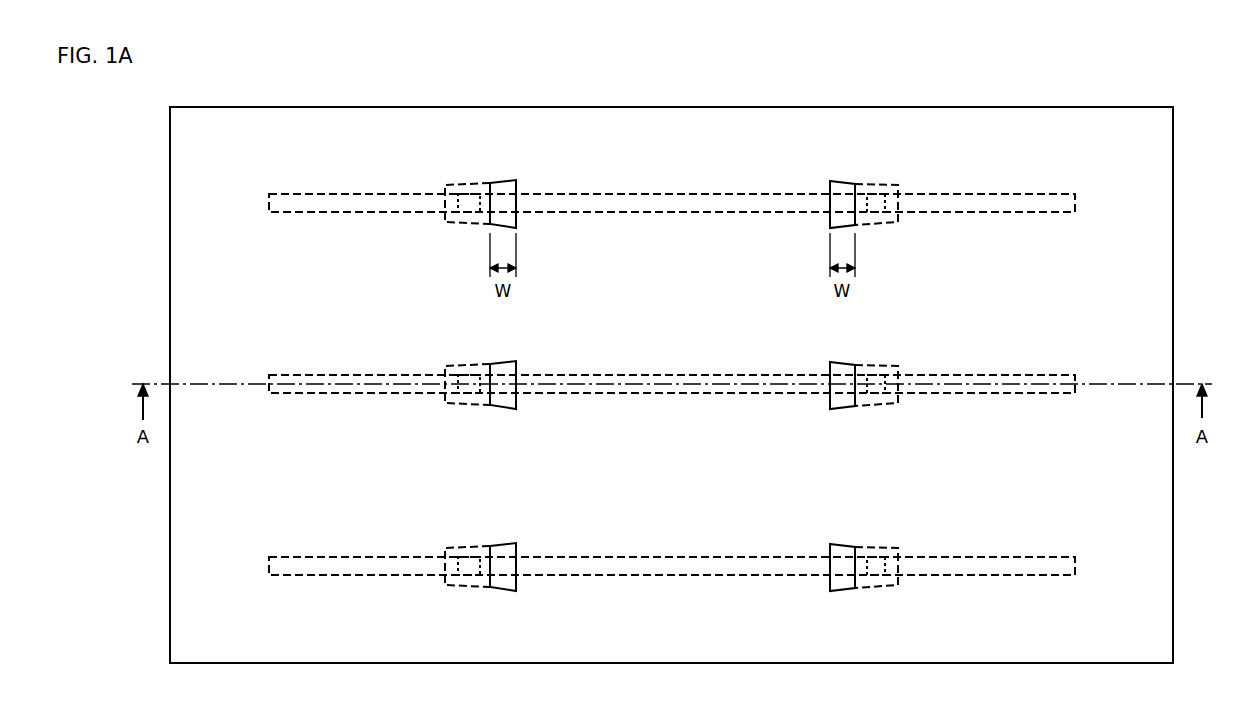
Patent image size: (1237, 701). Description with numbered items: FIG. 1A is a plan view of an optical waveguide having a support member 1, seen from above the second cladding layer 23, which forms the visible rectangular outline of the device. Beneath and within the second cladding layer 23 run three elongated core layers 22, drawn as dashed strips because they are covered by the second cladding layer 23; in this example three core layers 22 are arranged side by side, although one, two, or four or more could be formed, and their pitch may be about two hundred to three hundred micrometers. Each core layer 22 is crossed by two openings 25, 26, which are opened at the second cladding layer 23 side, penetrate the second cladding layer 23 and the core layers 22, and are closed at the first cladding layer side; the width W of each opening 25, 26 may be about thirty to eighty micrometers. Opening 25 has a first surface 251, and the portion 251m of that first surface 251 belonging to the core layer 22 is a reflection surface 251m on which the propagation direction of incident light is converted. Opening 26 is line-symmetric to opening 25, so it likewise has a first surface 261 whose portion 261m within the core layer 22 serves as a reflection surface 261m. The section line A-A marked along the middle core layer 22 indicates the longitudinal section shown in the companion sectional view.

The optical waveguide having a support member 1 is at (1179, 106).
The core layer 22 is at (1057, 195).
The second cladding layer 23 is at (1163, 223).
The opening 25 is at (496, 324).
The first surface 251 is at (513, 186).
The reflection surface 251m is at (476, 186).
The opening 26 is at (847, 324).
The first surface 261 is at (833, 186).
The reflection surface 261m is at (870, 186).